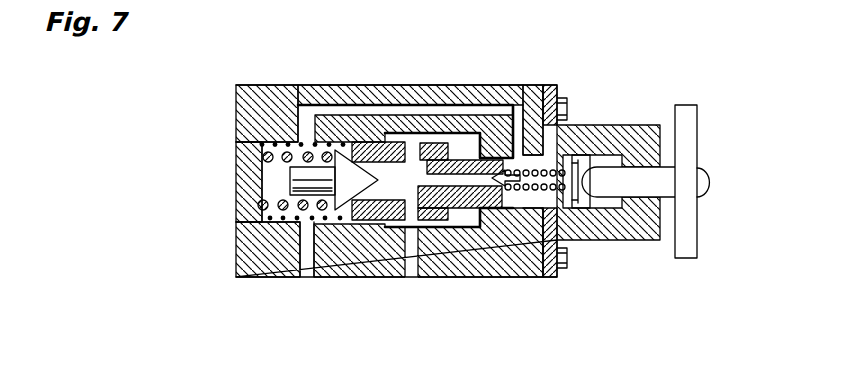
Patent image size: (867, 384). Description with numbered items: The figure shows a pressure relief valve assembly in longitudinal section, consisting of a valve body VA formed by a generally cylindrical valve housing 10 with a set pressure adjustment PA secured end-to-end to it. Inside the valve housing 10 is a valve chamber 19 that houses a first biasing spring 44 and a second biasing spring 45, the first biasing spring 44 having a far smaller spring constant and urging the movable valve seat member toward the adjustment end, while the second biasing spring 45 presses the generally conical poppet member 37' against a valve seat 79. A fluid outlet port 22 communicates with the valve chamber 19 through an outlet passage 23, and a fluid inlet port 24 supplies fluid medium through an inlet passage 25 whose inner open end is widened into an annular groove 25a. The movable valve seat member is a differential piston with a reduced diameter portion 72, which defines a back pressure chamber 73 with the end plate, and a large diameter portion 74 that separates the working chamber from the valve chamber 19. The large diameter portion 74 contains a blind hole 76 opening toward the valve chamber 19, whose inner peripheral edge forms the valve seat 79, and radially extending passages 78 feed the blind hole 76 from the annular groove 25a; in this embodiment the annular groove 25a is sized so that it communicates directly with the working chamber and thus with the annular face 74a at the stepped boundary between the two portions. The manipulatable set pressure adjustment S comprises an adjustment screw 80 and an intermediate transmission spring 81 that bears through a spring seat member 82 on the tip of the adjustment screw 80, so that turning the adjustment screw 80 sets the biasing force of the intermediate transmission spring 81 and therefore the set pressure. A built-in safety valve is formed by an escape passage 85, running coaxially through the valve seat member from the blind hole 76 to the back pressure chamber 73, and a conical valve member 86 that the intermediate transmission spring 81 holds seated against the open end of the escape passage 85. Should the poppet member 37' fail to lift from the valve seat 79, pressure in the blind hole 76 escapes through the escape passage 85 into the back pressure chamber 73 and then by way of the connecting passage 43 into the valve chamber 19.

The valve housing 10 is at (240, 243).
The valve chamber 19 is at (272, 183).
The fluid outlet port 22 is at (305, 262).
The outlet passage 23 is at (300, 243).
The fluid inlet port 24 is at (410, 250).
The inlet passage 25 is at (438, 252).
The annular groove 25a is at (388, 228).
The poppet member 37' is at (340, 282).
The connecting passage 43 is at (322, 108).
The first biasing spring 44 is at (270, 218).
The second biasing spring 45 is at (283, 148).
The reduced diameter portion 72 is at (485, 165).
The back pressure chamber 73 is at (570, 210).
The large diameter portion 74 is at (372, 162).
The annular face 74a is at (500, 203).
The blind hole 76 is at (419, 198).
The radially extending passages 78 is at (410, 145).
The valve seat 79 is at (346, 195).
The adjustment screw 80 is at (645, 180).
The intermediate transmission spring 81 is at (597, 240).
The spring seat member 82 is at (603, 190).
The escape passage 85 is at (455, 178).
The valve member 86 is at (540, 197).
The manipulatable set pressure adjustment S is at (581, 116).
The valve body VA is at (224, 160).
The set pressure adjustment PA is at (652, 262).